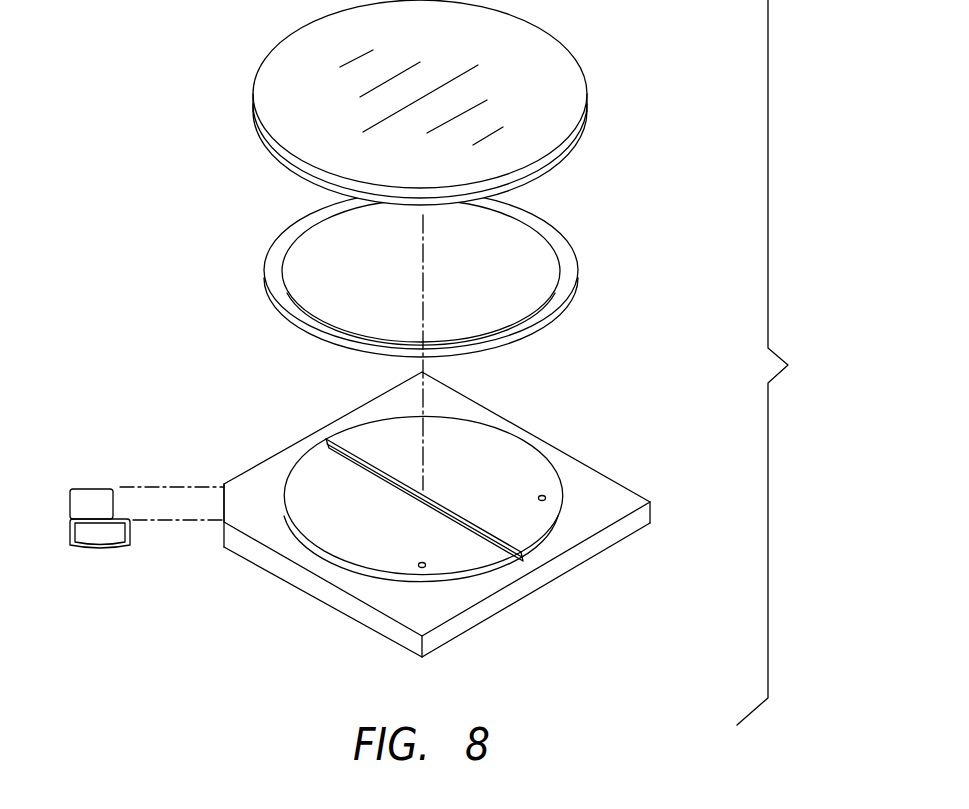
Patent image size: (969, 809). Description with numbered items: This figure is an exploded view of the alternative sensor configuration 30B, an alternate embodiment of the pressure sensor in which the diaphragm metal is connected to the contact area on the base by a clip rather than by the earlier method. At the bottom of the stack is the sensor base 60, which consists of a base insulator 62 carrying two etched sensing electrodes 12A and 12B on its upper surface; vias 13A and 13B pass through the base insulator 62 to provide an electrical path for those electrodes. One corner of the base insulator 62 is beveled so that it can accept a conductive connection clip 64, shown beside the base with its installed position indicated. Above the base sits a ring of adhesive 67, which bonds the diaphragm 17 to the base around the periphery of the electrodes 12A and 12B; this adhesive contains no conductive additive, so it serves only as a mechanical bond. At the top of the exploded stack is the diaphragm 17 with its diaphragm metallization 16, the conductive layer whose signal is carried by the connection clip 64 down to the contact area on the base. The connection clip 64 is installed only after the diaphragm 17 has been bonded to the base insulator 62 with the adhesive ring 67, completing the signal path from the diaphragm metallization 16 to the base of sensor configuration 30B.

The diaphragm metallization 16 is at (530, 75).
The diaphragm 17 is at (566, 155).
The ring of adhesive 67 is at (272, 273).
The sensing electrode 12A is at (510, 455).
The sensing electrode 12B is at (363, 553).
The via 13A is at (545, 496).
The via 13B is at (420, 563).
The base insulator 62 is at (428, 610).
The sensor base 60 is at (578, 570).
The conductive connection clip 64 is at (103, 552).
The alternative sensor configuration 30B is at (811, 362).